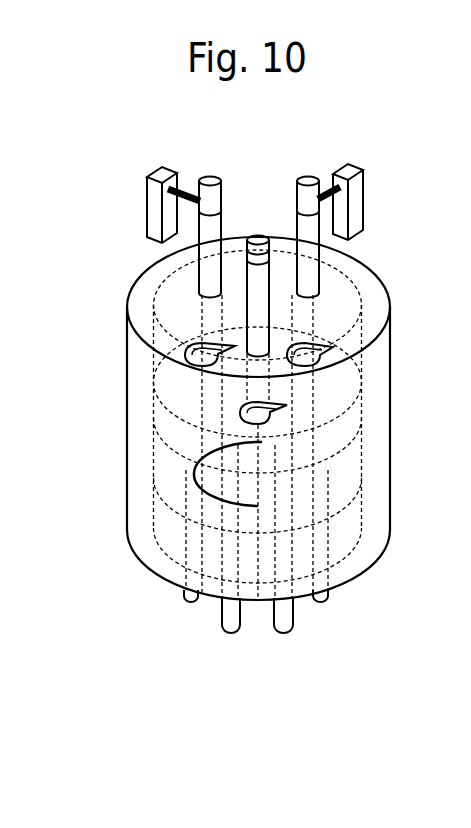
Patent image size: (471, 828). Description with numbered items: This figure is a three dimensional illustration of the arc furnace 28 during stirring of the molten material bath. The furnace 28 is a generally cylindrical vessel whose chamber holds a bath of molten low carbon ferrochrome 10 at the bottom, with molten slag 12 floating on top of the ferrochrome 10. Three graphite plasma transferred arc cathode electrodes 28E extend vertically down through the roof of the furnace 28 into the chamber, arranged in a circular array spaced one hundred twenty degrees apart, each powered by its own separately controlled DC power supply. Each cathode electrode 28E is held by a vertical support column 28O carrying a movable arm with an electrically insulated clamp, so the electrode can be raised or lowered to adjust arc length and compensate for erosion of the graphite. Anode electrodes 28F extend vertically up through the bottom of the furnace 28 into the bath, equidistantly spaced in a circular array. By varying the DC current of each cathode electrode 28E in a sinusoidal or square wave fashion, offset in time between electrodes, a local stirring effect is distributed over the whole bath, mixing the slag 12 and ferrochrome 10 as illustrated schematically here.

The molten low carbon ferrochrome 10 is at (163, 432).
The molten slag 12 is at (183, 388).
The furnace 28 is at (392, 350).
The cathode electrodes 28E is at (196, 274).
The anode electrodes 28F is at (192, 466).
The vertical support columns 28O is at (153, 195).